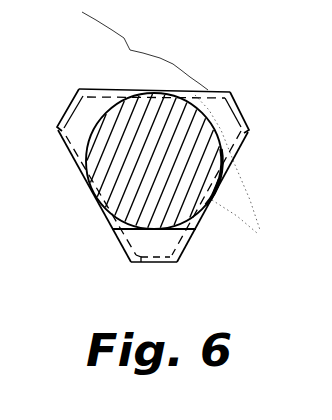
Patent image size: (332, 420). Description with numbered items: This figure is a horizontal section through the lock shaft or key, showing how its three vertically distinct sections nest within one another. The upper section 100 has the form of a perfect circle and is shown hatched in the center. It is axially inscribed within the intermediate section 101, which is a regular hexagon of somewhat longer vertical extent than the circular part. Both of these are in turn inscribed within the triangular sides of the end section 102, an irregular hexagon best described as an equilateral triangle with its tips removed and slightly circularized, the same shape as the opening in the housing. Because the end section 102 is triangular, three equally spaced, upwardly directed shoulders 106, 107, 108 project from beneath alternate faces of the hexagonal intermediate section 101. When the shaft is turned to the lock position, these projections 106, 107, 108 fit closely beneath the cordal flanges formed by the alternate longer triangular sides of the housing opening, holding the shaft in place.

The upper section 100 is at (214, 196).
The intermediate section 101 is at (176, 91).
The end section 102 is at (241, 148).
The shoulder 106 is at (228, 118).
The shoulder 107 is at (80, 117).
The shoulder 108 is at (148, 242).